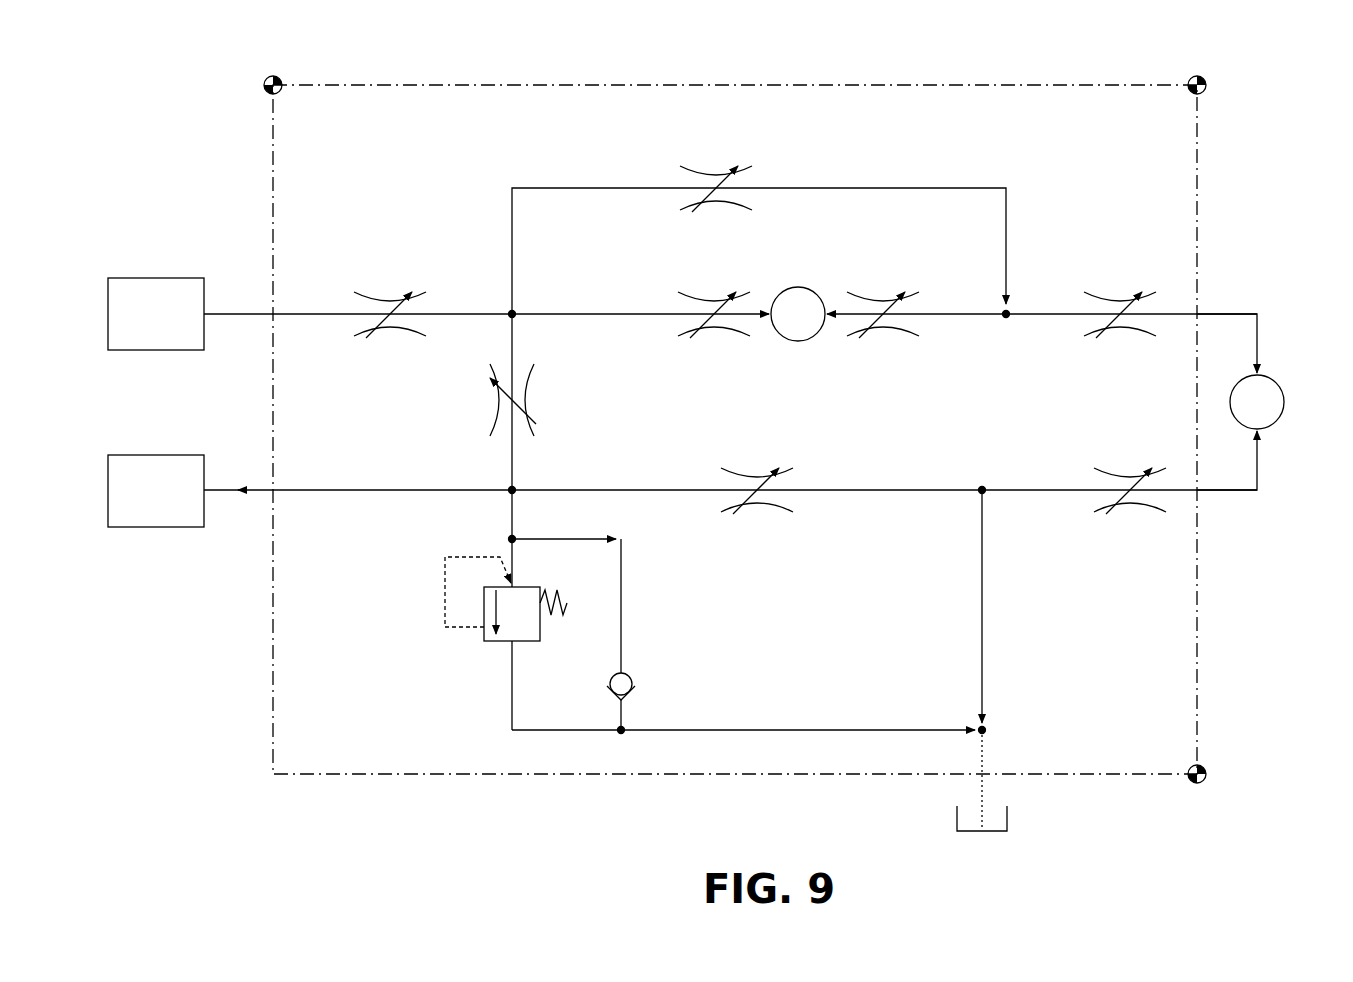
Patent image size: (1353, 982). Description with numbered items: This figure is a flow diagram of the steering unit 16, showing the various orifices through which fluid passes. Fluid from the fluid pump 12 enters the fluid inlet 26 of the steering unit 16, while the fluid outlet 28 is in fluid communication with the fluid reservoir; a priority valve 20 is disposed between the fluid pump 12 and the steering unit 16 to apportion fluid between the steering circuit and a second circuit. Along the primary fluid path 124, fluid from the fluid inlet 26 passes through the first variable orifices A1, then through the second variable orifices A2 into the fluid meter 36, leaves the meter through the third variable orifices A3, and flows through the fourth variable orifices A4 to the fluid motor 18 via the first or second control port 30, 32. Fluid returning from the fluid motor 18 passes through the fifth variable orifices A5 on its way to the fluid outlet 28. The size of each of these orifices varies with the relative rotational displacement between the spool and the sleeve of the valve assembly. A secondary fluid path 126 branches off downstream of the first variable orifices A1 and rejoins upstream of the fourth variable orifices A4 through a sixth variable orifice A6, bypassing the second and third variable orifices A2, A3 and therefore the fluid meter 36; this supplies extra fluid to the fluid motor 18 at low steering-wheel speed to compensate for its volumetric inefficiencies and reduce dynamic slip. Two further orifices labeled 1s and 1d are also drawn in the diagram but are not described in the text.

The steering unit 16 is at (390, 66).
The fluid pump 12 is at (165, 327).
The priority valve 20 is at (165, 504).
The fluid inlet 26 is at (278, 313).
The fluid outlet 28 is at (275, 491).
The primary fluid path 124 is at (582, 316).
The secondary fluid path 126 is at (908, 188).
The fluid meter 36 is at (802, 348).
The fluid motor 18 is at (1278, 380).
The first control port 30 is at (1200, 313).
The second control port 32 is at (1200, 492).
The first variable orifices A1 is at (390, 328).
The second variable orifices A2 is at (714, 328).
The third variable orifices A3 is at (883, 328).
The fourth variable orifices A4 is at (1120, 328).
The fifth variable orifices A5 is at (1130, 504).
The sixth variable orifice A6 is at (716, 176).
The variable orifice valve 1s is at (525, 400).
The variable orifice valve 1d is at (757, 504).